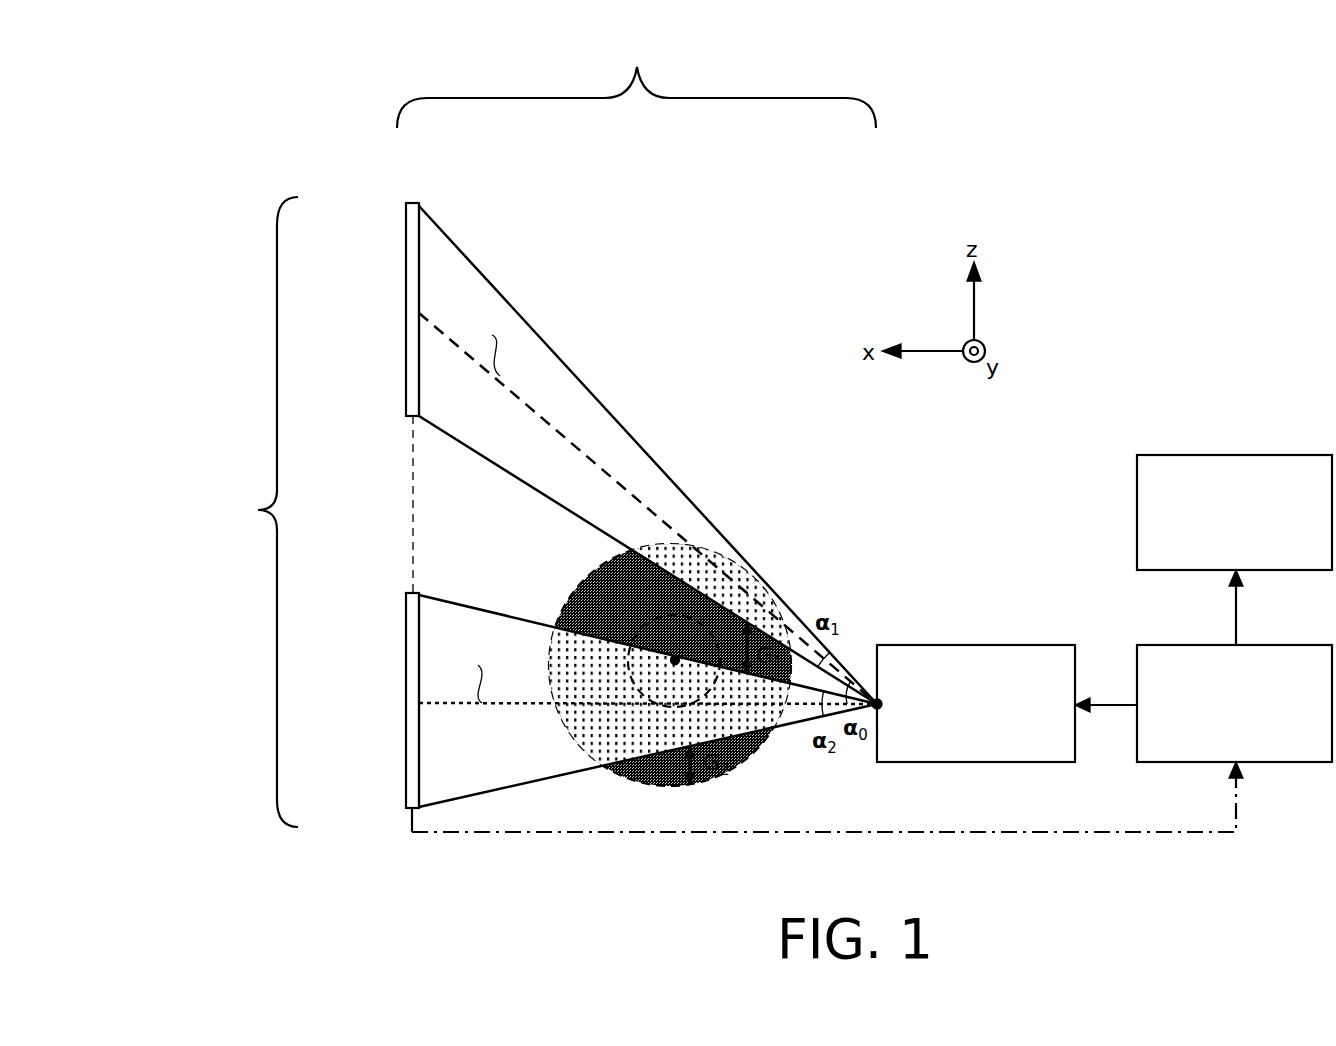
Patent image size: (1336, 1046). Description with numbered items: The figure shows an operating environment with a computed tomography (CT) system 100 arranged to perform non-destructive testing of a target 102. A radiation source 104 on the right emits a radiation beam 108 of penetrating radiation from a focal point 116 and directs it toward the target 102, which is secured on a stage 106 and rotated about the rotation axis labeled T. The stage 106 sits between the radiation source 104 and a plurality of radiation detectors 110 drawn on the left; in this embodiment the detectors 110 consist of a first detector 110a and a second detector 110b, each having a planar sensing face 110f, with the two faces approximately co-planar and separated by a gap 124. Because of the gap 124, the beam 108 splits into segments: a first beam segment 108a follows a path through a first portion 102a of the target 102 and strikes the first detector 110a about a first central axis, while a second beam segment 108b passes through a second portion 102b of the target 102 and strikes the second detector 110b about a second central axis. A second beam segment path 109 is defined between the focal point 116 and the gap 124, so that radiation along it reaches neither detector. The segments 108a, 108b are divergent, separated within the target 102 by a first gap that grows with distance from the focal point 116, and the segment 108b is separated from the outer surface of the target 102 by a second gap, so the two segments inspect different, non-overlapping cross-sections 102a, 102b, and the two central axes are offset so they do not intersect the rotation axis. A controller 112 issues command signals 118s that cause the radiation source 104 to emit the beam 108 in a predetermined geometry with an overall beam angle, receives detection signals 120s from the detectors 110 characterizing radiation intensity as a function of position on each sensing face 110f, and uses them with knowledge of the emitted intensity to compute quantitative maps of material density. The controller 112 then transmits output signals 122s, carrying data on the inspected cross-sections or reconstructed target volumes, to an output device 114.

The computed tomography (CT) system 100 is at (1170, 272).
The target 102 is at (745, 762).
The first portion of the target 102a is at (740, 605).
The second portion of the target 102b is at (648, 701).
The radiation source 104 is at (976, 703).
The stage 106 is at (637, 625).
The radiation beam 108 is at (636, 85).
The first beam segment 108a is at (648, 455).
The second beam segment 108b is at (648, 701).
The second beam segment path 109 is at (468, 515).
The plurality of radiation detectors 110 is at (257, 510).
The first detector 110a is at (406, 290).
The second detector 110b is at (406, 703).
The sensing face 110f is at (421, 237).
The controller 112 is at (1234, 703).
The output device 114 is at (1234, 512).
The focal point 116 is at (877, 704).
The command signals 118s is at (1105, 704).
The detection signal 120s is at (940, 832).
The output signals 122s is at (1237, 620).
The gap 124 is at (412, 553).